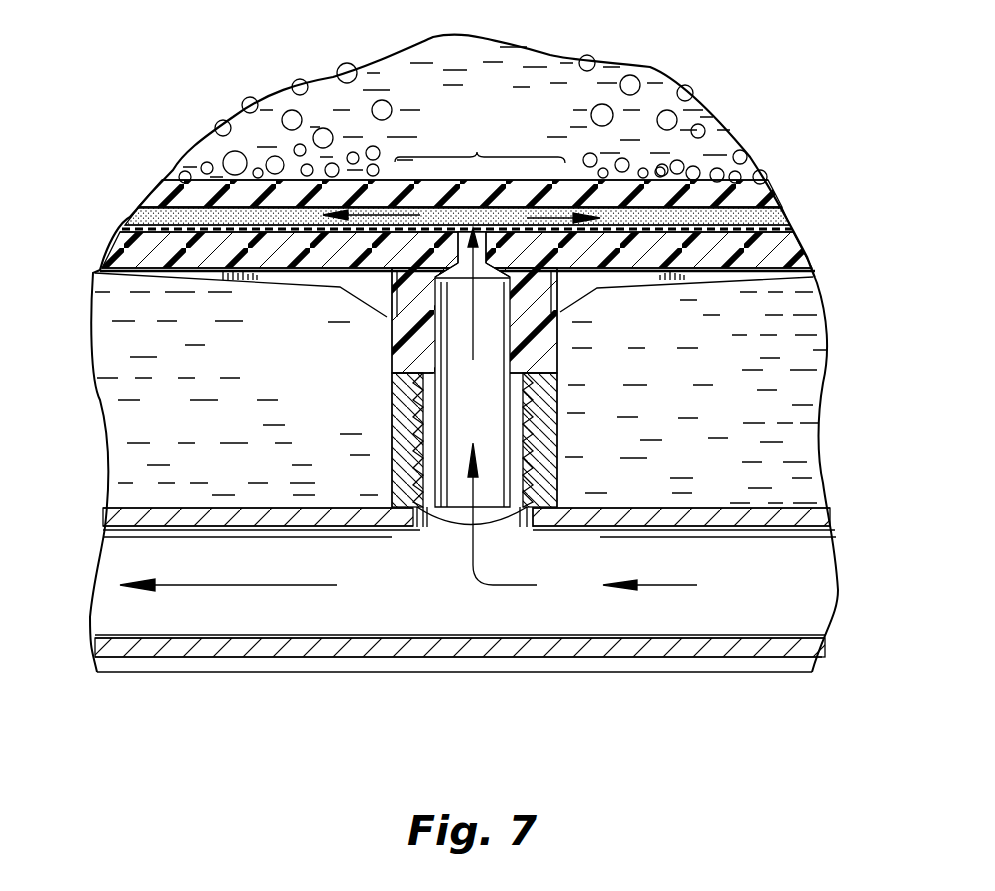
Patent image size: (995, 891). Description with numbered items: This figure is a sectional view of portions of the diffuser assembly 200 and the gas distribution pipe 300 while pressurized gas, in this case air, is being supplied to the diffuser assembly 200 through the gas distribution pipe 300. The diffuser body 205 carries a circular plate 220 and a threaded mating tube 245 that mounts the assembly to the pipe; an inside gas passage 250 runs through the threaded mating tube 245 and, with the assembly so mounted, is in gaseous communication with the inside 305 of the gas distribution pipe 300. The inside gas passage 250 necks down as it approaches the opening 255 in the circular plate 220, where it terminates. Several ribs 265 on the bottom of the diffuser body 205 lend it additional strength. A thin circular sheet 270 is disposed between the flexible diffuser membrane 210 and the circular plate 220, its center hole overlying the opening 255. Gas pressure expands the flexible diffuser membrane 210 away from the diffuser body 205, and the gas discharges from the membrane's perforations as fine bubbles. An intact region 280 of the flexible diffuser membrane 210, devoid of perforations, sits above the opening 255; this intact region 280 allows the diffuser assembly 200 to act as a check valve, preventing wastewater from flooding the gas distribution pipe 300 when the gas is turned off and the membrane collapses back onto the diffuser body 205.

The diffuser assembly 200 is at (115, 172).
The flexible diffuser membrane 210 is at (782, 193).
The circular plate 220 is at (793, 240).
The thin circular sheet 270 is at (120, 223).
The intact region 280 is at (479, 148).
The opening 255 is at (467, 226).
The inside gas passage 250 is at (485, 423).
The threaded mating tube 245 is at (386, 340).
The diffuser body 205 is at (299, 291).
The ribs 265 is at (622, 284).
The gas distribution pipe 300 is at (91, 550).
The inside of the gas distribution pipe 305 is at (400, 602).